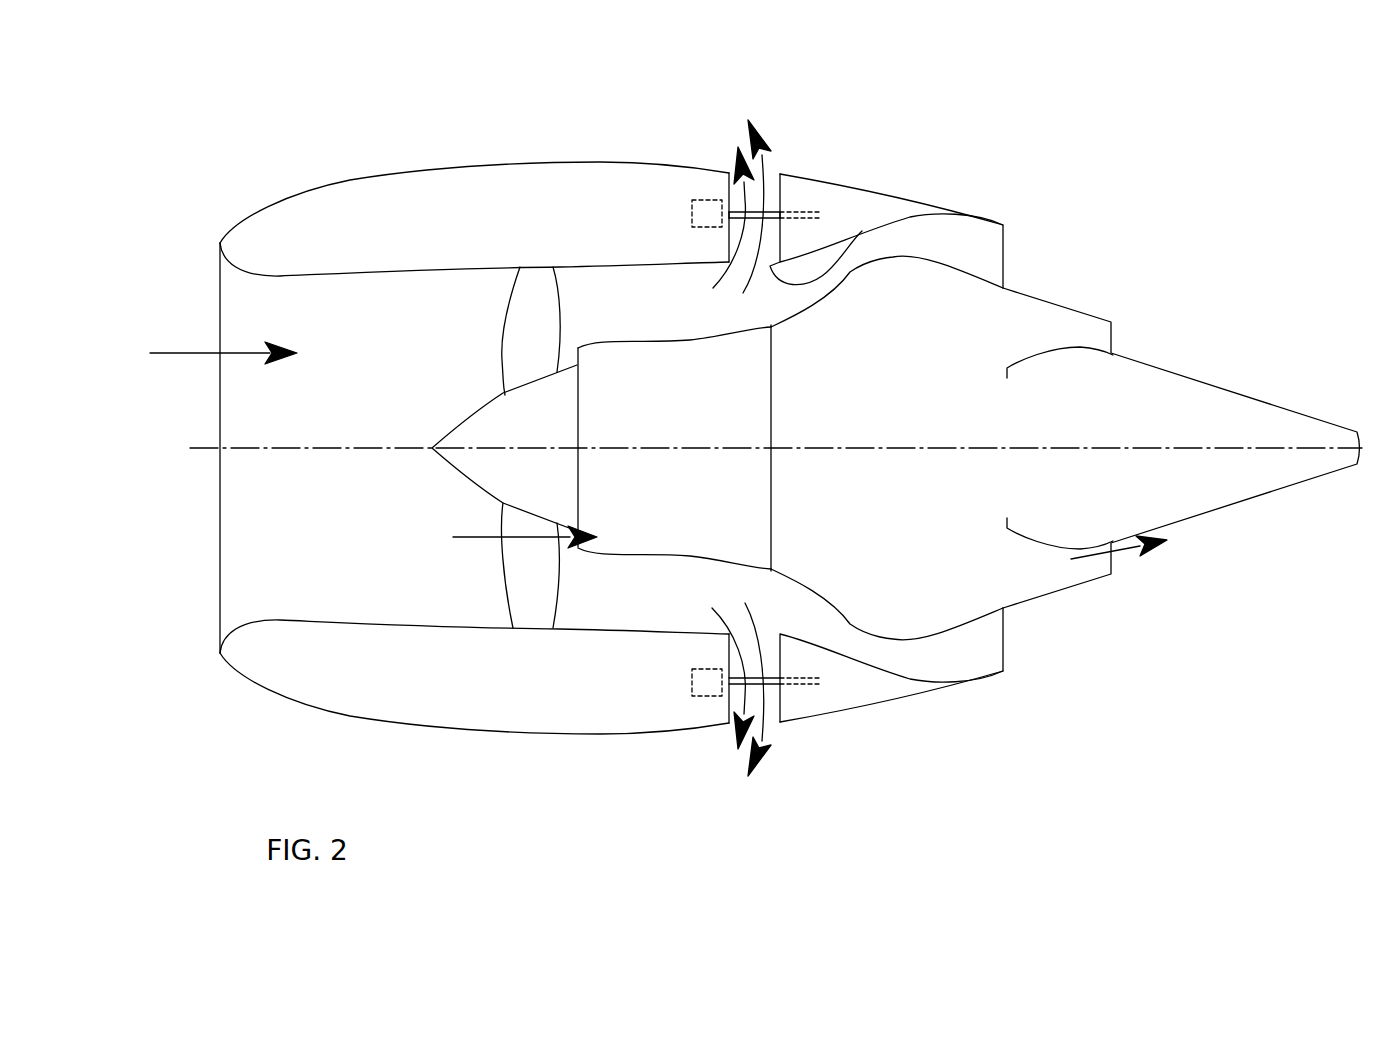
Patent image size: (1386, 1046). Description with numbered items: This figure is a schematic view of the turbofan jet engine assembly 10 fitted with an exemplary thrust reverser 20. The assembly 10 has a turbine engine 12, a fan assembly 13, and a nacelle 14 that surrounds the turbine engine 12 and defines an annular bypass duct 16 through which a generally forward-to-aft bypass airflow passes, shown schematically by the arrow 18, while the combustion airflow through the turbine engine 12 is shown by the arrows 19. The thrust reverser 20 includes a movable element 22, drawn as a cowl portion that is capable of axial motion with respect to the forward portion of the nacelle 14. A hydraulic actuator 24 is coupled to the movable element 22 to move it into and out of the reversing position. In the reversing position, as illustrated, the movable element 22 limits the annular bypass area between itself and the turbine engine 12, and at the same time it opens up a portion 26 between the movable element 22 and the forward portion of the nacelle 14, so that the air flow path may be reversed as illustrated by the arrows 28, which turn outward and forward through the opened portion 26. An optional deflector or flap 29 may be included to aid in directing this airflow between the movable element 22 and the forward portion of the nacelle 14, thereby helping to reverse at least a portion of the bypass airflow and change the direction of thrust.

The turbofan jet engine assembly 10 is at (243, 174).
The turbine engine 12 is at (665, 375).
The fan assembly 13 is at (527, 287).
The nacelle 14 is at (344, 183).
The annular bypass duct 16 is at (590, 289).
The bypass airflow arrow 18 is at (200, 352).
The combustion airflow arrows 19 is at (527, 540).
The thrust reverser 20 is at (836, 114).
The movable element 22 is at (810, 173).
The hydraulic actuator 24 is at (771, 212).
The opened portion 26 is at (739, 203).
The reversed airflow arrows 28 is at (773, 153).
The deflector or flap 29 is at (743, 297).